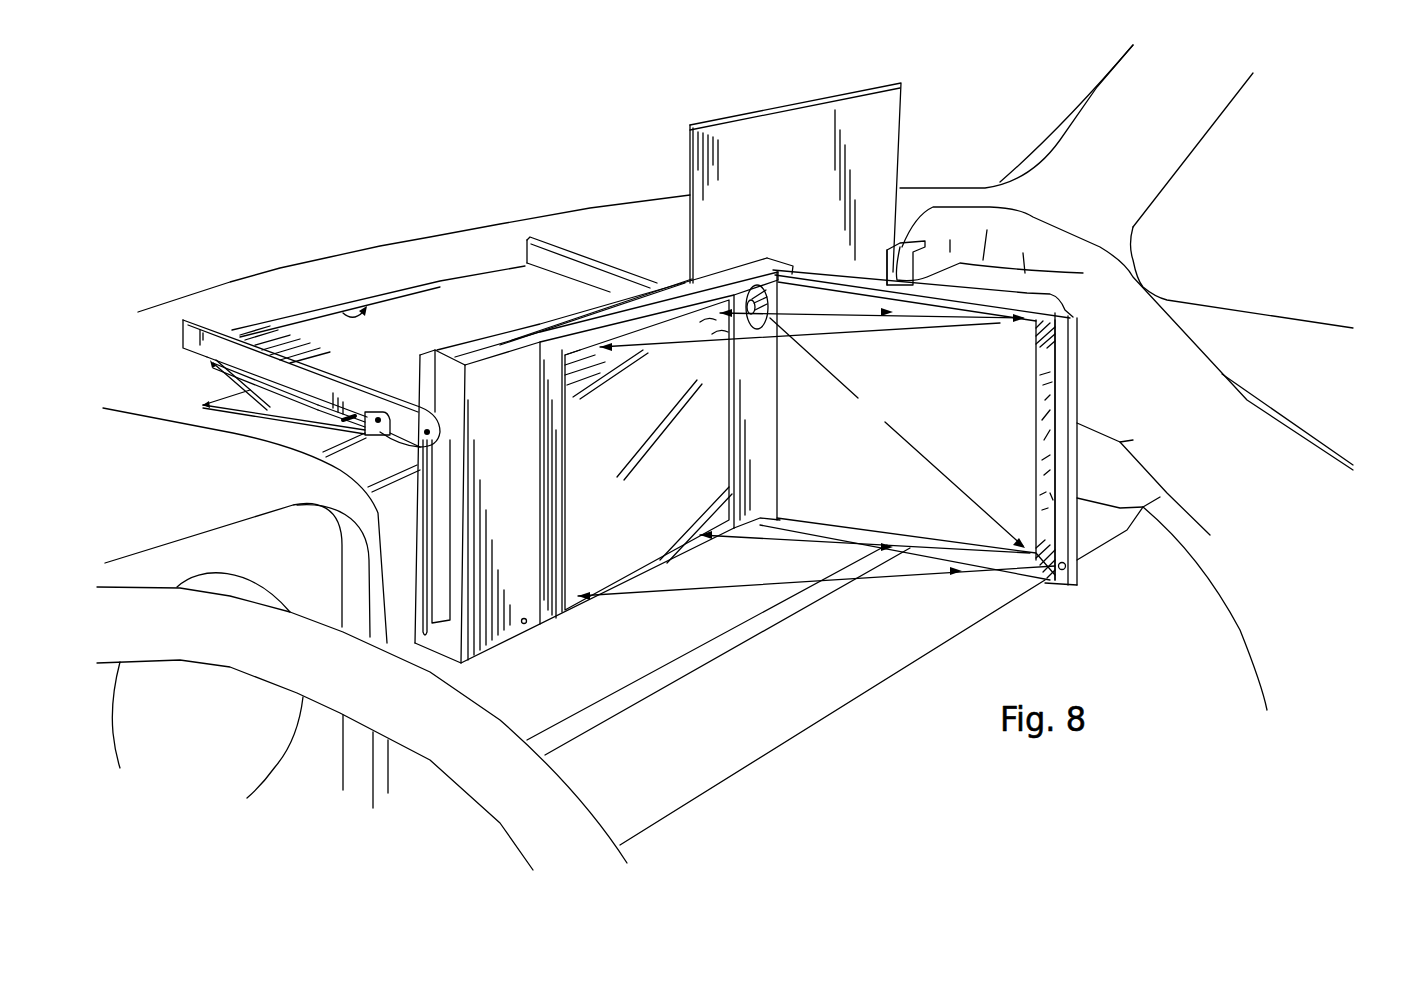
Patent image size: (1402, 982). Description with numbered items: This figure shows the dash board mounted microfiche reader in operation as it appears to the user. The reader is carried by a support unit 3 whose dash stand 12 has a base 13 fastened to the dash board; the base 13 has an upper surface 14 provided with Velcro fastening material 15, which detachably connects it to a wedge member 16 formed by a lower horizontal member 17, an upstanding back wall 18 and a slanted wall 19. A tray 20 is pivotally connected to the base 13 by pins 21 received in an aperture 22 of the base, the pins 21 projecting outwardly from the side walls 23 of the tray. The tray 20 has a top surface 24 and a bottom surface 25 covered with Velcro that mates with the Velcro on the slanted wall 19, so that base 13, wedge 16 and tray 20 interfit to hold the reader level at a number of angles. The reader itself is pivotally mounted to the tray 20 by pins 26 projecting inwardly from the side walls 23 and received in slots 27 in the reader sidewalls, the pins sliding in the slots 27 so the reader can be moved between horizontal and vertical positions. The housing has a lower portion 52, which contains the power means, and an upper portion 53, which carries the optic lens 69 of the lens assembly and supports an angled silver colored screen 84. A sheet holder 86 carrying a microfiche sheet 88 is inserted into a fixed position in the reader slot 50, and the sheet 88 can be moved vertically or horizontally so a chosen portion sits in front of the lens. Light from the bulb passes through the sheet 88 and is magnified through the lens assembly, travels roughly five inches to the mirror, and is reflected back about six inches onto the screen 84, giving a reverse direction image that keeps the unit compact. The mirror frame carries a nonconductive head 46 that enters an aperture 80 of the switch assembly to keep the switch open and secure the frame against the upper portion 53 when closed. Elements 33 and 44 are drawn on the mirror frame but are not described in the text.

The support unit 3 is at (446, 280).
The dash stand 12 is at (340, 424).
The base 13 is at (342, 438).
The upper surface 14 is at (328, 407).
The Velcro fastening material 15 is at (240, 405).
The wedge member 16 is at (208, 372).
The lower horizontal member 17 is at (290, 410).
The upstanding back wall 18 is at (222, 380).
The slanted wall 19 is at (266, 385).
The tray 20 is at (312, 337).
The pins 21 is at (375, 400).
The aperture 22 is at (378, 410).
The side walls 23 is at (403, 428).
The top surface 24 is at (420, 336).
The bottom surface 25 is at (337, 303).
The pins 26 is at (430, 432).
The slots 27 is at (422, 632).
The mirror lip 33 is at (923, 293).
The mirror edge strip 44 is at (1048, 380).
The head 46 is at (1063, 571).
The reader slot 50 is at (520, 322).
The lower portion 52 is at (474, 342).
The upper portion 53 is at (574, 506).
The optic lens 69 is at (769, 294).
The aperture 80 is at (522, 618).
The silver colored screen 84 is at (678, 438).
The sheet holder 86 is at (906, 243).
The microfiche sheet 88 is at (737, 118).